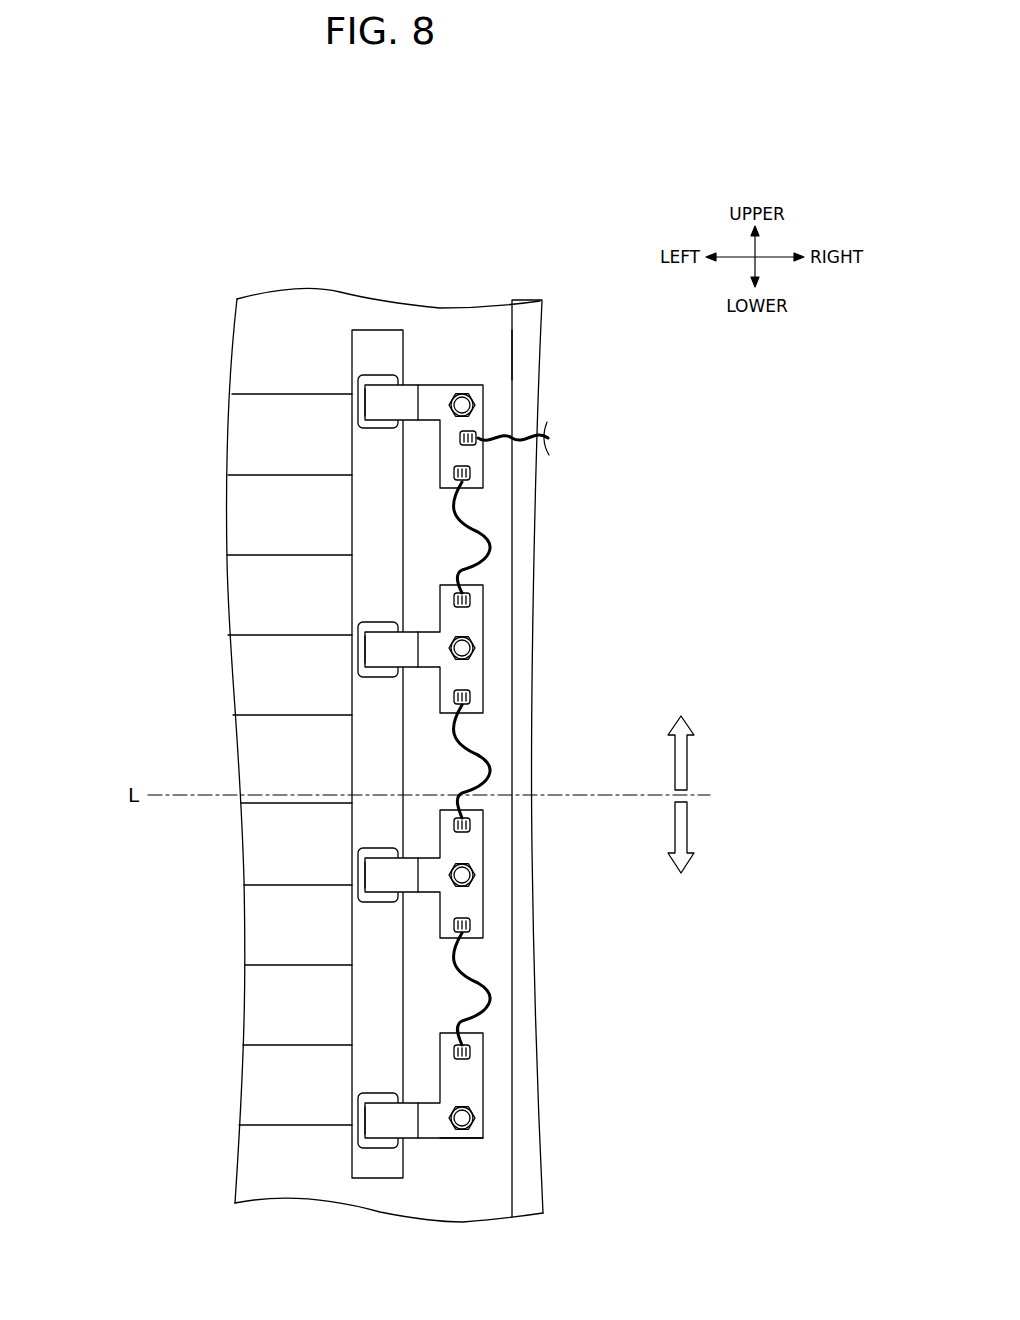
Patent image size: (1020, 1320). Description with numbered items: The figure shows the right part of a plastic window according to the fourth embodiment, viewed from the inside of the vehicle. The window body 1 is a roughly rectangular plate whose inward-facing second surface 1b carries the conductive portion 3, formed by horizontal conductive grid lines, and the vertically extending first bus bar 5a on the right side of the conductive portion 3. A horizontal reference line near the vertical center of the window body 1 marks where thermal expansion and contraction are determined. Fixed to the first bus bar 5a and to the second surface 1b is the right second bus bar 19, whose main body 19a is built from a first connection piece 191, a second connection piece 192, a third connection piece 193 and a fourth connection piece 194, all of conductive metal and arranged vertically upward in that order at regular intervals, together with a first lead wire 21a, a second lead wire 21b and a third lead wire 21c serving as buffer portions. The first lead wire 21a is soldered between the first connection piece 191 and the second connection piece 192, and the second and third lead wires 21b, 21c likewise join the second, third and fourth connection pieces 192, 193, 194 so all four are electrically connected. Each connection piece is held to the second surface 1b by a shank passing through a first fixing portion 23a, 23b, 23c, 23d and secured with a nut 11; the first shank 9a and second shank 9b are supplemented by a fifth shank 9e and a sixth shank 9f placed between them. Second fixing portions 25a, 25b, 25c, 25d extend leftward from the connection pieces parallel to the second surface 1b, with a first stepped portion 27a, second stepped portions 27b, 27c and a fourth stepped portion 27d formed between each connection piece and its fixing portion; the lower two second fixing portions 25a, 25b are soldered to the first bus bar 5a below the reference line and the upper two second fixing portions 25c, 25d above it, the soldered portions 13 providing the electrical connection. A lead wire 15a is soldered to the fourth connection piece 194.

The window body 1 is at (521, 318).
The second surface 1b is at (477, 355).
The conductive portion 3 is at (251, 386).
The first bus bar 5a is at (376, 350).
The first shank 9a is at (486, 1128).
The second shank 9b is at (453, 395).
The fifth shank 9e is at (486, 896).
The sixth shank 9f is at (486, 660).
The nut 11 is at (472, 397).
The soldered portion 13 is at (358, 380).
The lead wire 15a is at (521, 428).
The second bus bar 19 is at (453, 1158).
The main body 19a is at (497, 740).
The first connection piece 191 is at (480, 1048).
The second connection piece 192 is at (480, 908).
The third connection piece 193 is at (480, 680).
The fourth connection piece 194 is at (480, 459).
The first lead wire 21a is at (495, 1010).
The second lead wire 21b is at (495, 783).
The third lead wire 21c is at (498, 548).
The first fixing portion 23a is at (476, 1117).
The first fixing portion 23b is at (476, 874).
The first fixing portion 23c is at (476, 645).
The first fixing portion 23d is at (475, 401).
The second fixing portion 25a is at (368, 1125).
The second fixing portion 25b is at (368, 878).
The second fixing portion 25c is at (368, 652).
The second fixing portion 25d is at (368, 410).
The first stepped portion 27a is at (410, 1138).
The second stepped portion 27b is at (410, 893).
The second stepped portion 27c is at (410, 667).
The fourth stepped portion 27d is at (410, 407).